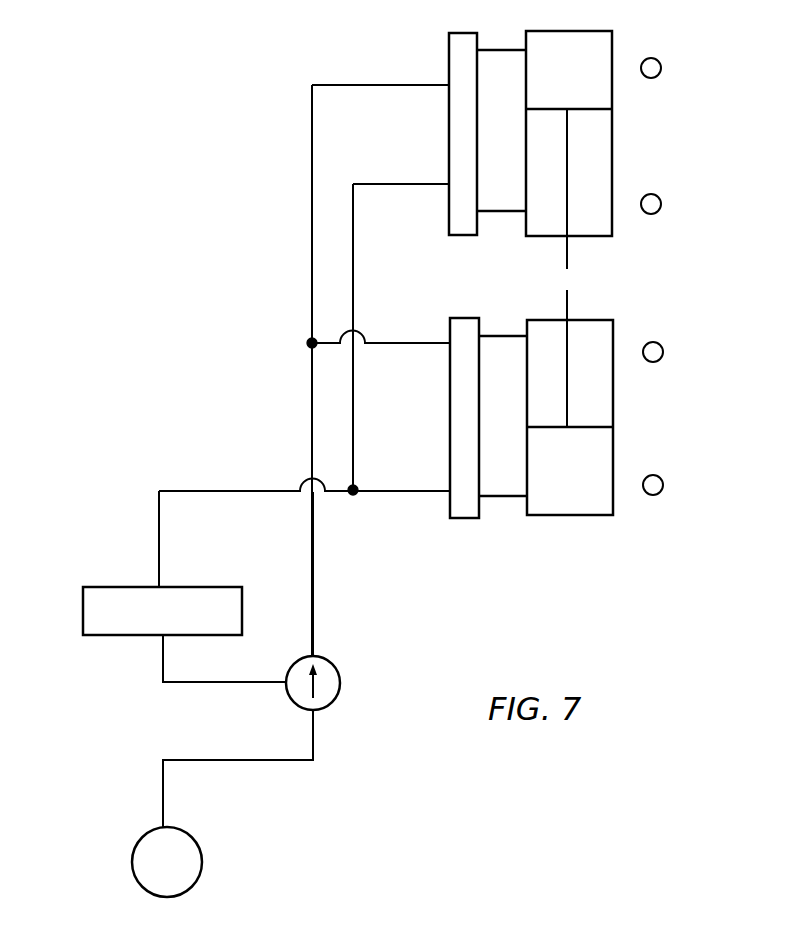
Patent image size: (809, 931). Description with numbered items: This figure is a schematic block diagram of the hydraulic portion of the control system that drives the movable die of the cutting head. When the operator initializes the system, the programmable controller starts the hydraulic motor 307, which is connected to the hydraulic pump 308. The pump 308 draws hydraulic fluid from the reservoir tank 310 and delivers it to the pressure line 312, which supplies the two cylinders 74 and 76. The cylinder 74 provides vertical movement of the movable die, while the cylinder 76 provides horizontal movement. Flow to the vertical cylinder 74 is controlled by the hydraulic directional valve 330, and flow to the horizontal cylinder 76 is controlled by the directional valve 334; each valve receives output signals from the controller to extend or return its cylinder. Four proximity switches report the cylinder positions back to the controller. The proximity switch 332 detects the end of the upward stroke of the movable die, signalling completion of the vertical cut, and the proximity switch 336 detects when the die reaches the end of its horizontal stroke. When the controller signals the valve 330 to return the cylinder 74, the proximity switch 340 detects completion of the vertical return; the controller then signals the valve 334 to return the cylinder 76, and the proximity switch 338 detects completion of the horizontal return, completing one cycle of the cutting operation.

The directional valve 334 is at (465, 33).
The cylinder 76 is at (593, 237).
The hydraulic directional valve 330 is at (458, 519).
The cylinder 74 is at (580, 516).
The proximity switch 338 is at (659, 61).
The proximity switch 336 is at (661, 203).
The proximity switch 332 is at (663, 349).
The proximity switch 340 is at (663, 483).
The reservoir tank 310 is at (183, 587).
The pressure line 312 is at (313, 610).
The hydraulic pump 308 is at (335, 663).
The hydraulic motor 307 is at (183, 829).